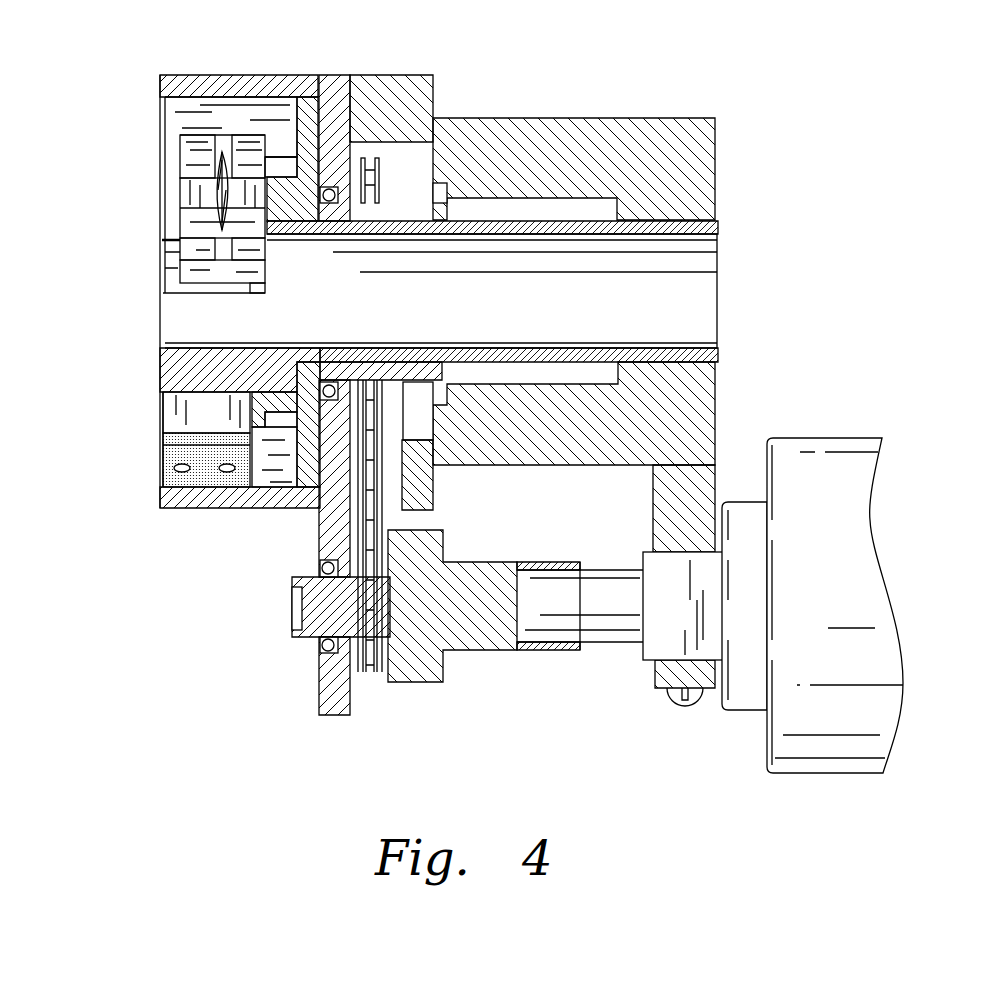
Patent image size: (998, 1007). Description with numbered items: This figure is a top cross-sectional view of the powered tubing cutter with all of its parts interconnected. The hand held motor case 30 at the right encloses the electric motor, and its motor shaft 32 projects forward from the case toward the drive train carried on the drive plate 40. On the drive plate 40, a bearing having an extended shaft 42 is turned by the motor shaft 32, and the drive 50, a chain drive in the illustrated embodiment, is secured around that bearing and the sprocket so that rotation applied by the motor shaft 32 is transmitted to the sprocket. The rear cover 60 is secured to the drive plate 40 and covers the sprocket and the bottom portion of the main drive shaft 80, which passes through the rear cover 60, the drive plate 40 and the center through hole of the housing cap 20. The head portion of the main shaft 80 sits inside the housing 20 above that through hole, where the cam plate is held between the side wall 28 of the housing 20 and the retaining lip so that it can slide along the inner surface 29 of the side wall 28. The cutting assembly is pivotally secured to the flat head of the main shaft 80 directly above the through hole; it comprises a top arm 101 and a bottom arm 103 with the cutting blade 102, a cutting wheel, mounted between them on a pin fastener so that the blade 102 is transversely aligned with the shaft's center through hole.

The housing cap 20 is at (160, 508).
The side wall 28 is at (203, 75).
The inner surface 29 is at (180, 100).
The motor case 30 is at (833, 545).
The motor shaft 32 is at (613, 642).
The drive plate 40 is at (327, 715).
The extended shaft 42 is at (478, 650).
The drive 50 is at (370, 673).
The rear cover 60 is at (603, 118).
The main drive shaft 80 is at (720, 287).
The top arm 101 is at (188, 207).
The cutting blade 102 is at (223, 195).
The bottom arm 103 is at (237, 162).